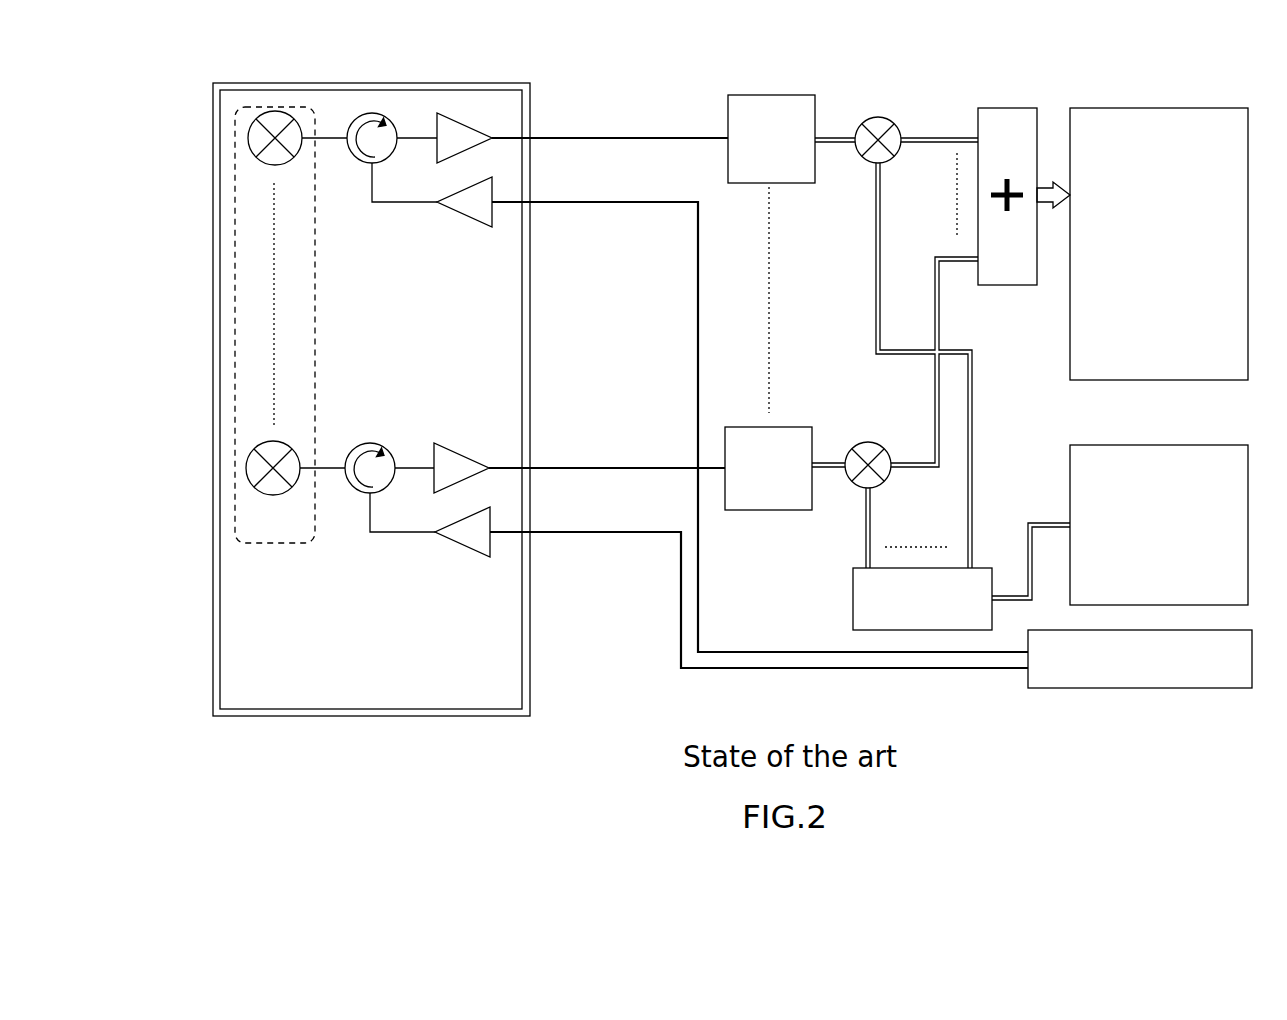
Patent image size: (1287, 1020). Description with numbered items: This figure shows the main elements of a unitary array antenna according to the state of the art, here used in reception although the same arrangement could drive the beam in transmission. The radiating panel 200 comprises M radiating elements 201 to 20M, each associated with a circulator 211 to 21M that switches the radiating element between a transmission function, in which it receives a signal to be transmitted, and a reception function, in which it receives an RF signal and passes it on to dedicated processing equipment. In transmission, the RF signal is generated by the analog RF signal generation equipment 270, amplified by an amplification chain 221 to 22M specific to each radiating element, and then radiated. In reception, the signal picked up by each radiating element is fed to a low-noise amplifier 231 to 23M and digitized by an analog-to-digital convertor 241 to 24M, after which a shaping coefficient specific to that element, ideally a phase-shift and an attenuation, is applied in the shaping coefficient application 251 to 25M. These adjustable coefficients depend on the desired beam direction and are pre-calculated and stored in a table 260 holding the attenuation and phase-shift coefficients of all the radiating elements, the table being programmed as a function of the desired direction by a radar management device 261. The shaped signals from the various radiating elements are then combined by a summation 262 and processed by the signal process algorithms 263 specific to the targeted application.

The radiating panel 200 is at (307, 88).
The radiating element 201 is at (262, 137).
The radiating element 20M is at (247, 477).
The circulator 211 is at (353, 160).
The circulator 21M is at (367, 443).
The amplification chain 221 is at (462, 218).
The amplification chain 22M is at (447, 540).
The low-noise amplifier 231 is at (455, 122).
The low-noise amplifier 23M is at (443, 442).
The analog-to-digital convertor 241 is at (747, 93).
The analog-to-digital convertor 24M is at (787, 425).
The shaping coefficient application 251 is at (879, 115).
The shaping coefficient application 25M is at (853, 488).
The table 260 is at (850, 593).
The radar management device 261 is at (1183, 445).
The summation 262 is at (995, 107).
The signal process algorithms 263 is at (1167, 107).
The analog RF signal generation equipment 270 is at (1155, 690).